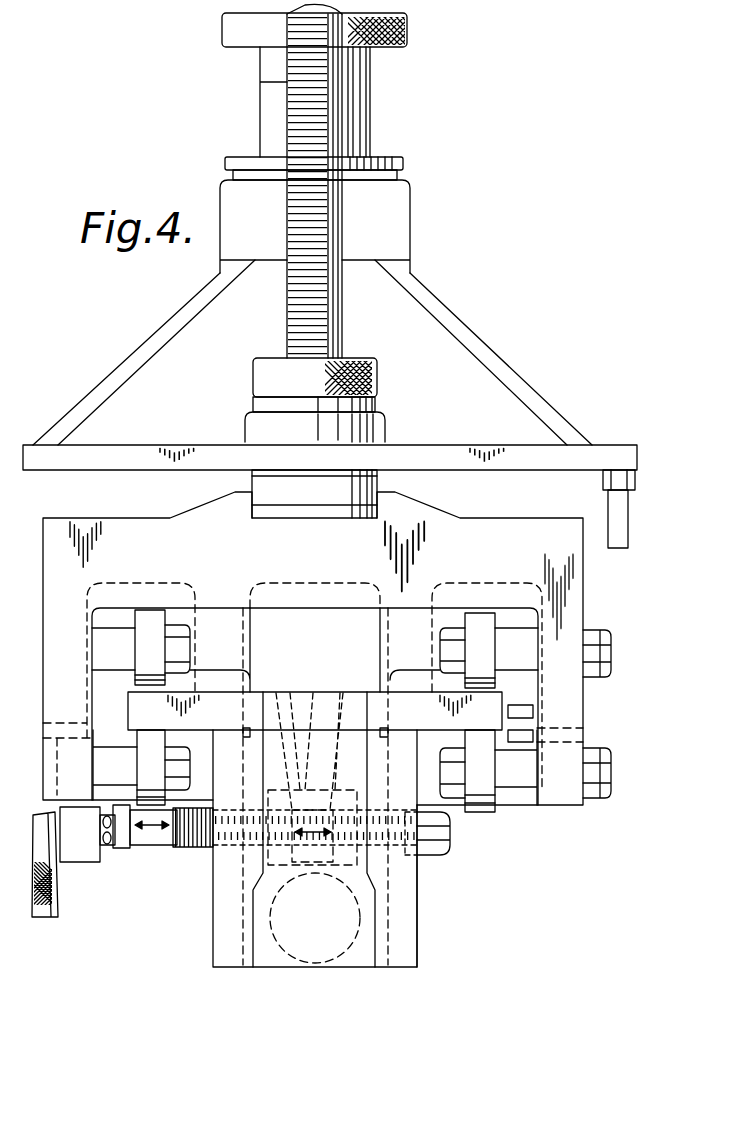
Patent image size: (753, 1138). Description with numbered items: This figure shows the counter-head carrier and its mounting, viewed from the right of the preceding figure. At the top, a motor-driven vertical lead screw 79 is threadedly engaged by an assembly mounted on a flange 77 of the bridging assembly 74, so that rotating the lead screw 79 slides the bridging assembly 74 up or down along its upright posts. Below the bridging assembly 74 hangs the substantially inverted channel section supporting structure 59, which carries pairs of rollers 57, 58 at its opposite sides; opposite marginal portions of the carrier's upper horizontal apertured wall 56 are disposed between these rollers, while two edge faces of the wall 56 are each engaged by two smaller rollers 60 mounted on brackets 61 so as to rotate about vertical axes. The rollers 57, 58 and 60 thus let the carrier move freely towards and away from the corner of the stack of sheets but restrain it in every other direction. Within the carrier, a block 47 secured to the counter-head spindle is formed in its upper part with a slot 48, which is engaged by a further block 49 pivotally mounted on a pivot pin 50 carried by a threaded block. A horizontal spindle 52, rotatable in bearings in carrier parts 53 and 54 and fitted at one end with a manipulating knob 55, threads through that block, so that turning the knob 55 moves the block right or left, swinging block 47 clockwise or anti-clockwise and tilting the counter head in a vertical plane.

The block 47 is at (275, 697).
The slot 48 is at (315, 687).
The further block 49 is at (343, 695).
The pivot pin 50 is at (235, 852).
The horizontal spindle 52 is at (147, 837).
The carrier part 53 is at (227, 918).
The carrier part 54 is at (407, 873).
The manipulating knob 55 is at (48, 870).
The upper horizontal apertured wall 56 is at (470, 718).
The rollers 57 is at (480, 625).
The rollers 58 is at (478, 812).
The supporting structure 59 is at (517, 542).
The smaller rollers 60 is at (536, 706).
The brackets 61 is at (72, 823).
The bridging assembly 74 is at (472, 342).
The flange 77 is at (470, 460).
The vertical lead screw 79 is at (343, 222).